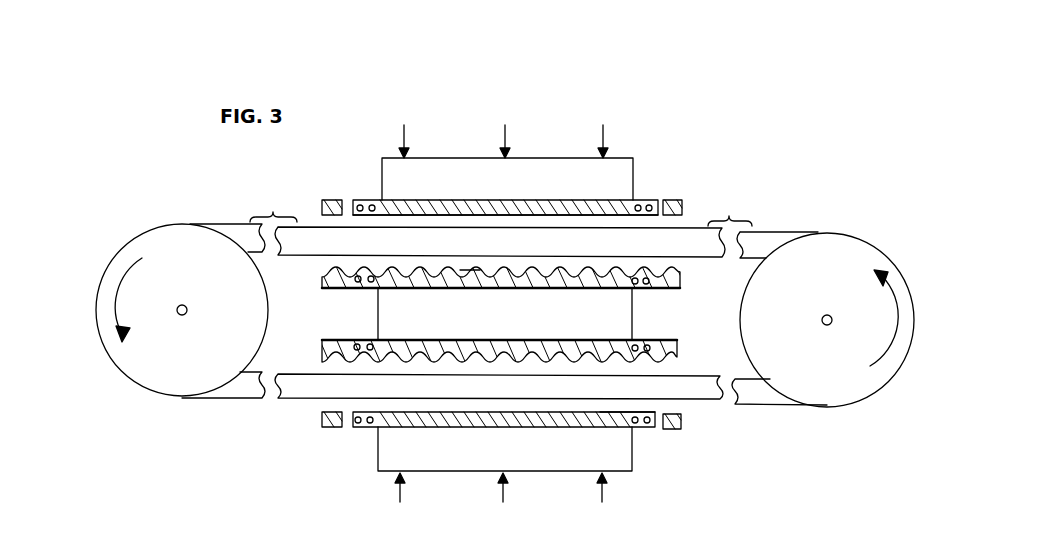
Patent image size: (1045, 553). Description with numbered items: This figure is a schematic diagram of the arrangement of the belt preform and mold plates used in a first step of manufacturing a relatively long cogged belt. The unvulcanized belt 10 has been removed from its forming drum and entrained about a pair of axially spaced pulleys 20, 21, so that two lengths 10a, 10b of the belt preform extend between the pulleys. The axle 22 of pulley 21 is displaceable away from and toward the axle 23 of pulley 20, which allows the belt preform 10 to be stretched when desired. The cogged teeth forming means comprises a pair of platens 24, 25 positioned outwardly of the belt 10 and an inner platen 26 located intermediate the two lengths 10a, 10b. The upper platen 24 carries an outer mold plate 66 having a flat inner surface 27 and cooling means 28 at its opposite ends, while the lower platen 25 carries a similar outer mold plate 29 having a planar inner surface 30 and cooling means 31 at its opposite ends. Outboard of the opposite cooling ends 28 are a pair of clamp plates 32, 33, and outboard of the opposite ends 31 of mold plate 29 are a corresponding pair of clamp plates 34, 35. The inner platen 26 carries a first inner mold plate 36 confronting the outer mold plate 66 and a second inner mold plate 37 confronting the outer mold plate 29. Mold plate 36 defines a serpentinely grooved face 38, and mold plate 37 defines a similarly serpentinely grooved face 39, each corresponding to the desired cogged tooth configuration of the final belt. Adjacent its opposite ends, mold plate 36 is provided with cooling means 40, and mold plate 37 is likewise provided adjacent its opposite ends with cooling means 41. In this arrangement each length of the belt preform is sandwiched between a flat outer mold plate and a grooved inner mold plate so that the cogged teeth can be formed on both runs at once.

The unvulcanized belt 10 is at (504, 292).
The length of the belt preform 10a is at (635, 240).
The length of the belt preform 10b is at (302, 390).
The pulley 20 is at (163, 239).
The pulley 21 is at (847, 248).
The axle of pulley 21 22 is at (830, 326).
The axle of pulley 20 23 is at (178, 316).
The upper platen 24 is at (545, 165).
The lower platen 25 is at (563, 455).
The inner platen 26 is at (620, 312).
The flat inner surface 27 is at (595, 213).
The cooling means 28 is at (363, 204).
The outer mold plate 29 is at (455, 423).
The planar inner surface 30 is at (603, 416).
The cooling means 31 is at (360, 430).
The clamp plate 32 is at (337, 199).
The clamp plate 33 is at (673, 203).
The clamp plate 34 is at (325, 429).
The clamp plate 35 is at (683, 424).
The first inner mold plate 36 is at (499, 284).
The second inner mold plate 37 is at (422, 352).
The serpentinely grooved face 38 is at (470, 272).
The serpentinely grooved face 39 is at (620, 360).
The cooling means 40 is at (353, 284).
The cooling means 41 is at (362, 339).
The outer mold plate 66 is at (438, 204).